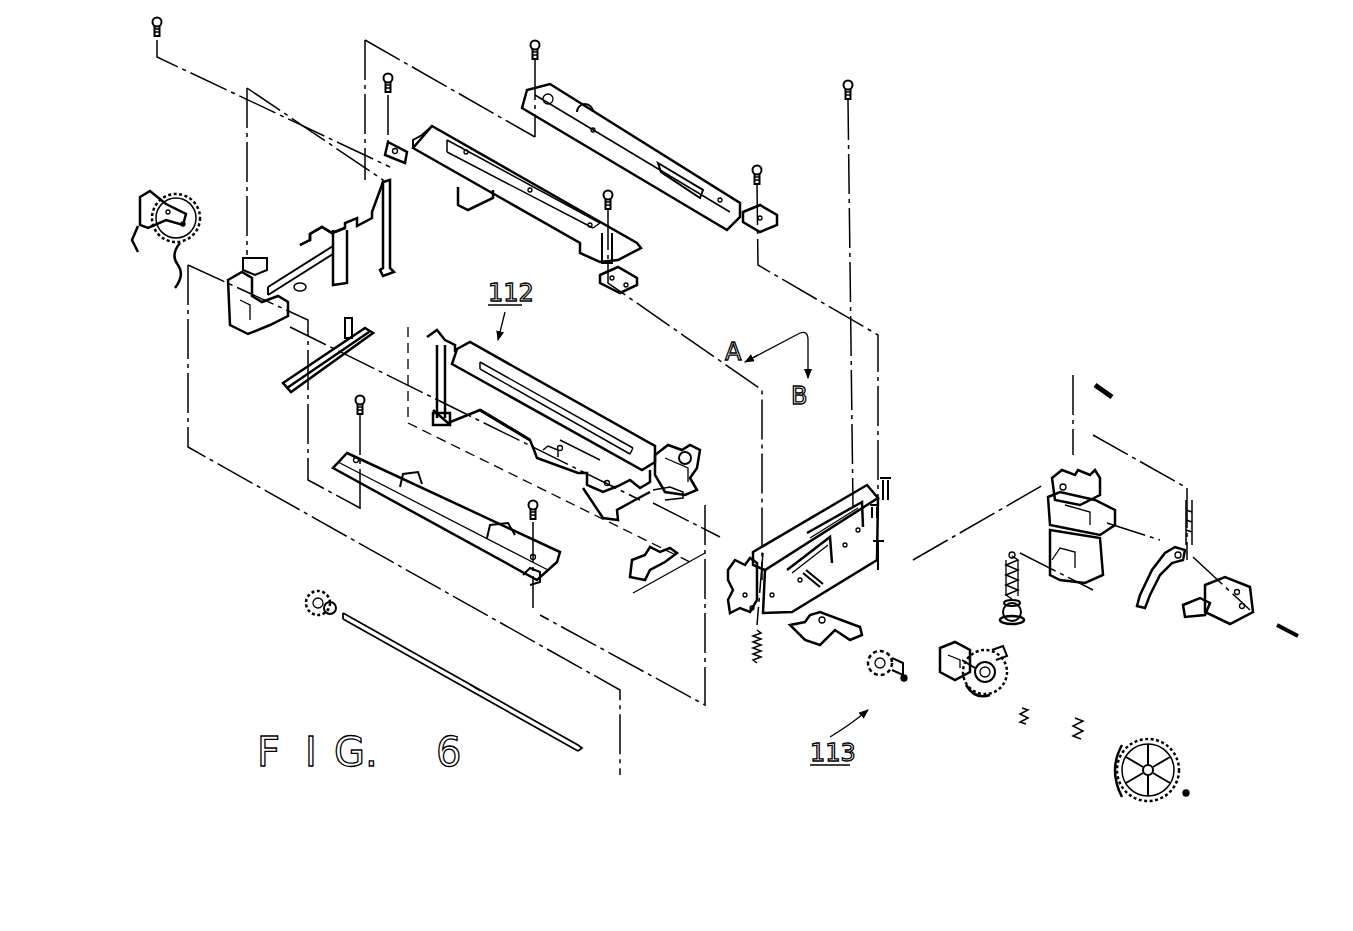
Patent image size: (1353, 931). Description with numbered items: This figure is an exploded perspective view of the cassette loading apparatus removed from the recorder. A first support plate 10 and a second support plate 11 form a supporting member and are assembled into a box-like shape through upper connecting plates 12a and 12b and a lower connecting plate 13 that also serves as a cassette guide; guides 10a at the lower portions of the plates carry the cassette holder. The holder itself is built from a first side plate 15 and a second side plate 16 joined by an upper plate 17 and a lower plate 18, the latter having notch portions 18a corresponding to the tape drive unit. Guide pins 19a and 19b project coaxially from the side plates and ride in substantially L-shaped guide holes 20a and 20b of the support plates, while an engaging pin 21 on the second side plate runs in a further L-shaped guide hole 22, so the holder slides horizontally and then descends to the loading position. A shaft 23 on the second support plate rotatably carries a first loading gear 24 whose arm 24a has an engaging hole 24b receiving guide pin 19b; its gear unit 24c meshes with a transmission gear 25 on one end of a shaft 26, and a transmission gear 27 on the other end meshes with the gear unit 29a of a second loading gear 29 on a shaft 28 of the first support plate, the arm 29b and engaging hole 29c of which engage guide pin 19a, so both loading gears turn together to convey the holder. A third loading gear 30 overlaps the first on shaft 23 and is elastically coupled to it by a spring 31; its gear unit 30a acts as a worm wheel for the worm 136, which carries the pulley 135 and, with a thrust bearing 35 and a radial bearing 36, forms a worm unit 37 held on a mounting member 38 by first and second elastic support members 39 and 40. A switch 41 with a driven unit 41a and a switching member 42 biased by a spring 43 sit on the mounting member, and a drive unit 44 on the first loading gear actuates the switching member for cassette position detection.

The first support plate 10 is at (390, 223).
The guide 10a is at (284, 385).
The second support plate 11 is at (873, 547).
The upper connecting plate 12a is at (558, 200).
The upper connecting plate 12b is at (652, 160).
The lower connecting plate 13 is at (458, 523).
The first side plate 15 is at (417, 410).
The second side plate 16 is at (670, 455).
The upper plate 17 is at (558, 400).
The lower plate 18 is at (595, 450).
The notch portion 18a is at (497, 422).
The guide pin 19a is at (452, 385).
The guide pin 19b is at (645, 505).
The guide hole 20a is at (322, 232).
The guide hole 20b is at (797, 550).
The engaging pin 21 is at (693, 460).
The guide hole 22 is at (833, 505).
The shaft 23 is at (813, 580).
The first loading gear 24 is at (1013, 670).
The arm 24a is at (945, 652).
The engaging hole 24b is at (937, 673).
The gear unit 24c is at (970, 710).
The transmission gear 25 is at (873, 673).
The shaft 26 is at (420, 663).
The transmission gear 27 is at (310, 613).
The shaft 28 is at (306, 288).
The second loading gear 29 is at (178, 186).
The gear unit 29a is at (174, 265).
The arm 29b is at (156, 198).
The engaging hole 29c is at (143, 236).
The third loading gear 30 is at (1113, 800).
The gear unit 30a is at (1153, 733).
The spring 31 is at (1010, 712).
The thrust bearing 35 is at (1006, 600).
The radial bearing 36 is at (1003, 605).
The worm unit 37 is at (1002, 562).
The mounting member 38 is at (1062, 485).
The first elastic support member 39 is at (1058, 520).
The second elastic support member 40 is at (1075, 573).
The switch 41 is at (1208, 617).
The driven unit 41a is at (1183, 617).
The switching member 42 is at (1143, 605).
The spring 43 is at (1194, 518).
The drive unit 44 is at (1003, 652).
The pulley 135 is at (1020, 616).
The worm 136 is at (1005, 570).